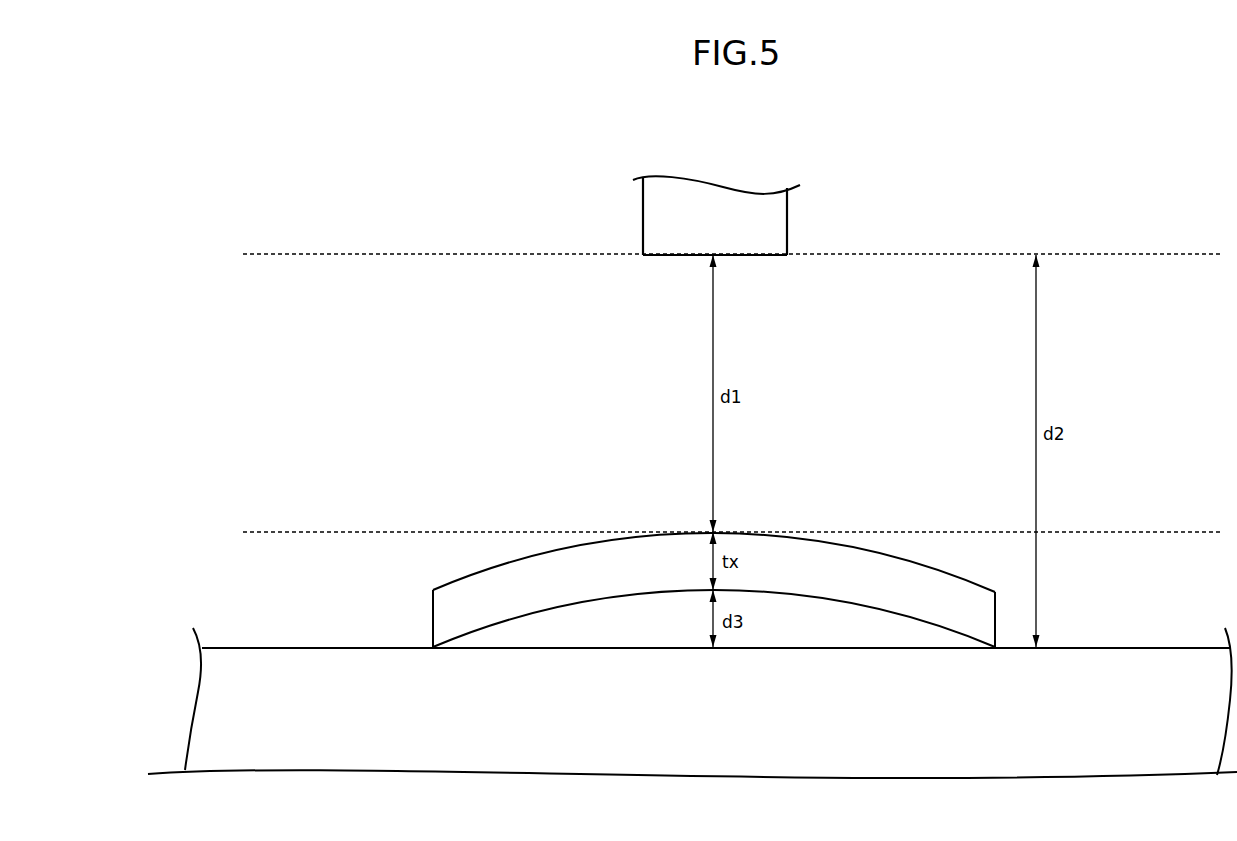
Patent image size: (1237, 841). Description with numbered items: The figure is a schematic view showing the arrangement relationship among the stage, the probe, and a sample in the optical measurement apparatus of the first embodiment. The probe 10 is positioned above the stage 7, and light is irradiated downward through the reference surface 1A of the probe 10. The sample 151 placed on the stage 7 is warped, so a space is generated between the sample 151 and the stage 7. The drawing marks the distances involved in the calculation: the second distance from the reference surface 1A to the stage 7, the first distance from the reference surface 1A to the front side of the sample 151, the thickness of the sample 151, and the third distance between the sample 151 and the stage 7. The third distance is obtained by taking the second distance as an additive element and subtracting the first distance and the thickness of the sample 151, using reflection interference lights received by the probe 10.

The probe 10 is at (665, 188).
The reference surface 1A is at (772, 254).
The sample 151 is at (582, 552).
The stage 7 is at (330, 655).